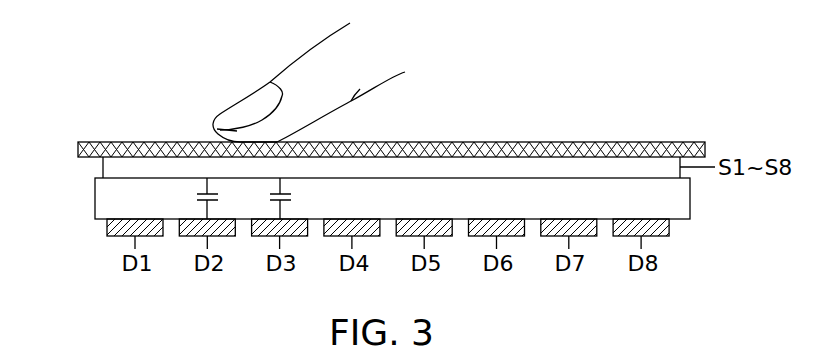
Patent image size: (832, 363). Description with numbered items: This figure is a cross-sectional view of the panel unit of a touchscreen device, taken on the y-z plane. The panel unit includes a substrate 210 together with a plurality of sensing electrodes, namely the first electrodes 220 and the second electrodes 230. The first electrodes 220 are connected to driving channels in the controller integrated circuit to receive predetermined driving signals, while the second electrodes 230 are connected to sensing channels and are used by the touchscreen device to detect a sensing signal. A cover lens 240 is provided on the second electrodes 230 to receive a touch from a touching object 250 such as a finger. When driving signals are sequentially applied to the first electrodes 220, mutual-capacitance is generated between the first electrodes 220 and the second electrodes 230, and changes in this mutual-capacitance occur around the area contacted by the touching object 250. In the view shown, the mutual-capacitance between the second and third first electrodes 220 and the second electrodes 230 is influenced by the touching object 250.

The touching object 250 is at (317, 67).
The cover lens 240 is at (510, 142).
The second electrodes 230 is at (103, 167).
The substrate 210 is at (100, 197).
The first electrodes 220 is at (107, 237).